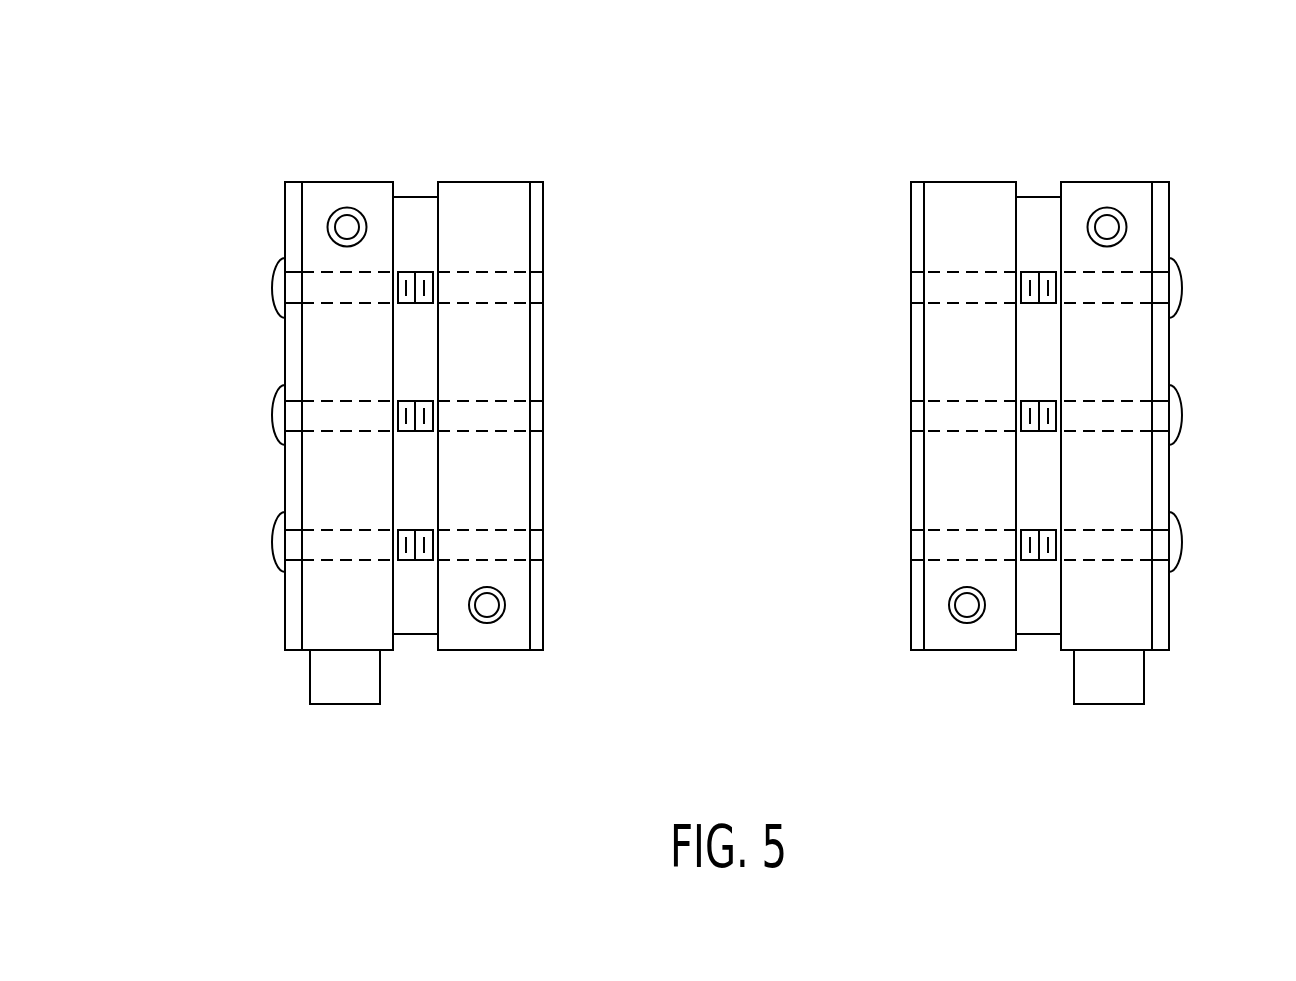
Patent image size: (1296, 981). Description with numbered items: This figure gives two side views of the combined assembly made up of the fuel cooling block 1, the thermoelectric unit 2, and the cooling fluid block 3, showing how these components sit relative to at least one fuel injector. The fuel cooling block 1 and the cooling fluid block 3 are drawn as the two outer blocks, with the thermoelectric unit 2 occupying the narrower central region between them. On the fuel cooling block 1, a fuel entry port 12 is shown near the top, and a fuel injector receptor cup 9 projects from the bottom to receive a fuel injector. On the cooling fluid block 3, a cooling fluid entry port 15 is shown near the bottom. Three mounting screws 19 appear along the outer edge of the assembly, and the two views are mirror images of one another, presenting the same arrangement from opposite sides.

The fuel cooling block 1 is at (331, 182).
The cooling fluid block 3 is at (488, 182).
The thermoelectric unit 2 is at (418, 636).
The fuel injector receptor cup 9 is at (345, 693).
The fuel entry port 12 is at (344, 225).
The cooling fluid entry port 15 is at (489, 605).
The mounting screws 19 is at (273, 288).